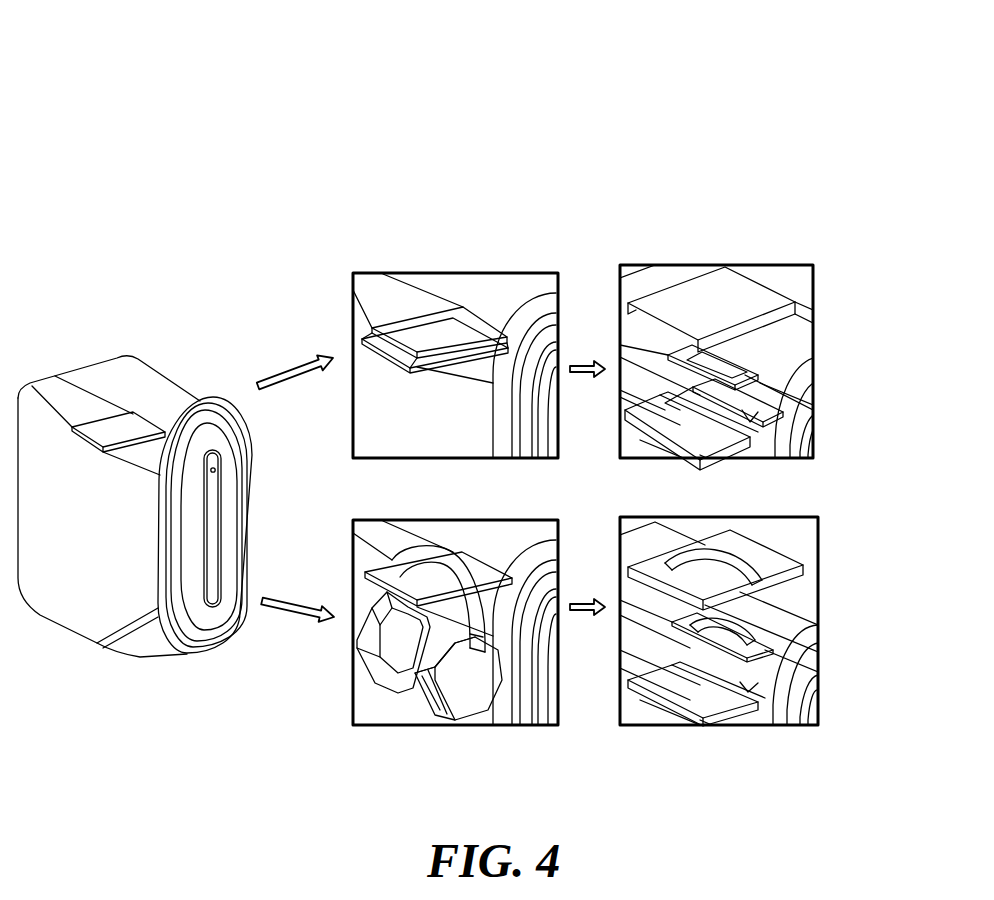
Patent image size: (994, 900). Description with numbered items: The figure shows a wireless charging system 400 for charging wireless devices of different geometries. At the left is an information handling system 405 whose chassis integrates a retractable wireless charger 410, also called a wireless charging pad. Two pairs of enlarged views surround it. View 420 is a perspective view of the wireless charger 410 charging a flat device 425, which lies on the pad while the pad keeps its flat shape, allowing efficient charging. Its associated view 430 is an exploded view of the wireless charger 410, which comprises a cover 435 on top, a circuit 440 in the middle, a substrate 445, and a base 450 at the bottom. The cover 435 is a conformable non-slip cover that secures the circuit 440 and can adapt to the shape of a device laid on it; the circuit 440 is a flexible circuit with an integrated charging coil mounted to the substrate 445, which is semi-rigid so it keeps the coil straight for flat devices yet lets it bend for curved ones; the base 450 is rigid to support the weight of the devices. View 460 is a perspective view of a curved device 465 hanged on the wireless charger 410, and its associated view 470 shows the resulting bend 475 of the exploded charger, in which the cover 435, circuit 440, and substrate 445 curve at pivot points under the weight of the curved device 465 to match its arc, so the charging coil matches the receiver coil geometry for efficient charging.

The wireless charging system 400 is at (208, 42).
The information handling system 405 is at (148, 657).
The retractable wireless charger 410 is at (150, 418).
The view 420 is at (455, 270).
The flat device 425 is at (400, 326).
The view 430 is at (697, 263).
The cover 435 is at (745, 292).
The circuit 440 is at (740, 357).
The substrate 445 is at (765, 385).
The base 450 is at (730, 420).
The view 460 is at (447, 521).
The curved device 465 is at (430, 565).
The view 470 is at (722, 516).
The bend 475 is at (893, 670).